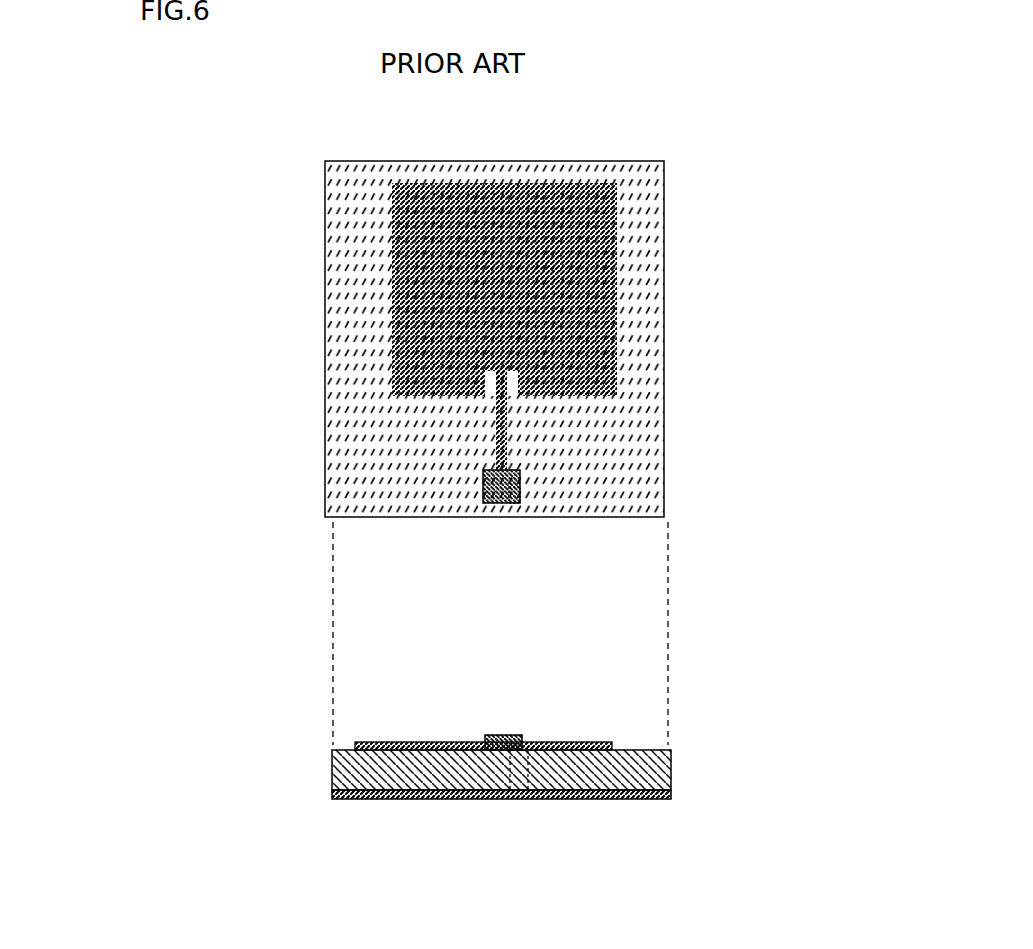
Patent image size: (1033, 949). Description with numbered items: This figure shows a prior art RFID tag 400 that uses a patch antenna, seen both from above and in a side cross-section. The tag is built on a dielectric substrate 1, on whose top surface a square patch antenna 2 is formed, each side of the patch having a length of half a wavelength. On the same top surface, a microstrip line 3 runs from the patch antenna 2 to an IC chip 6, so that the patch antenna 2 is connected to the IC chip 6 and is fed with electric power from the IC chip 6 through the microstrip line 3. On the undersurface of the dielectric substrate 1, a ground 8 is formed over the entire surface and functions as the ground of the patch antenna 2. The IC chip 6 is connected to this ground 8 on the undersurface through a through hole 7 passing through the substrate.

The RFID tag 400 is at (423, 130).
The dielectric substrate 1 is at (350, 222).
The patch antenna 2 is at (400, 298).
The microstrip line 3 is at (497, 420).
The IC chip 6 is at (520, 470).
The through hole 7 is at (520, 503).
The ground 8 is at (618, 407).